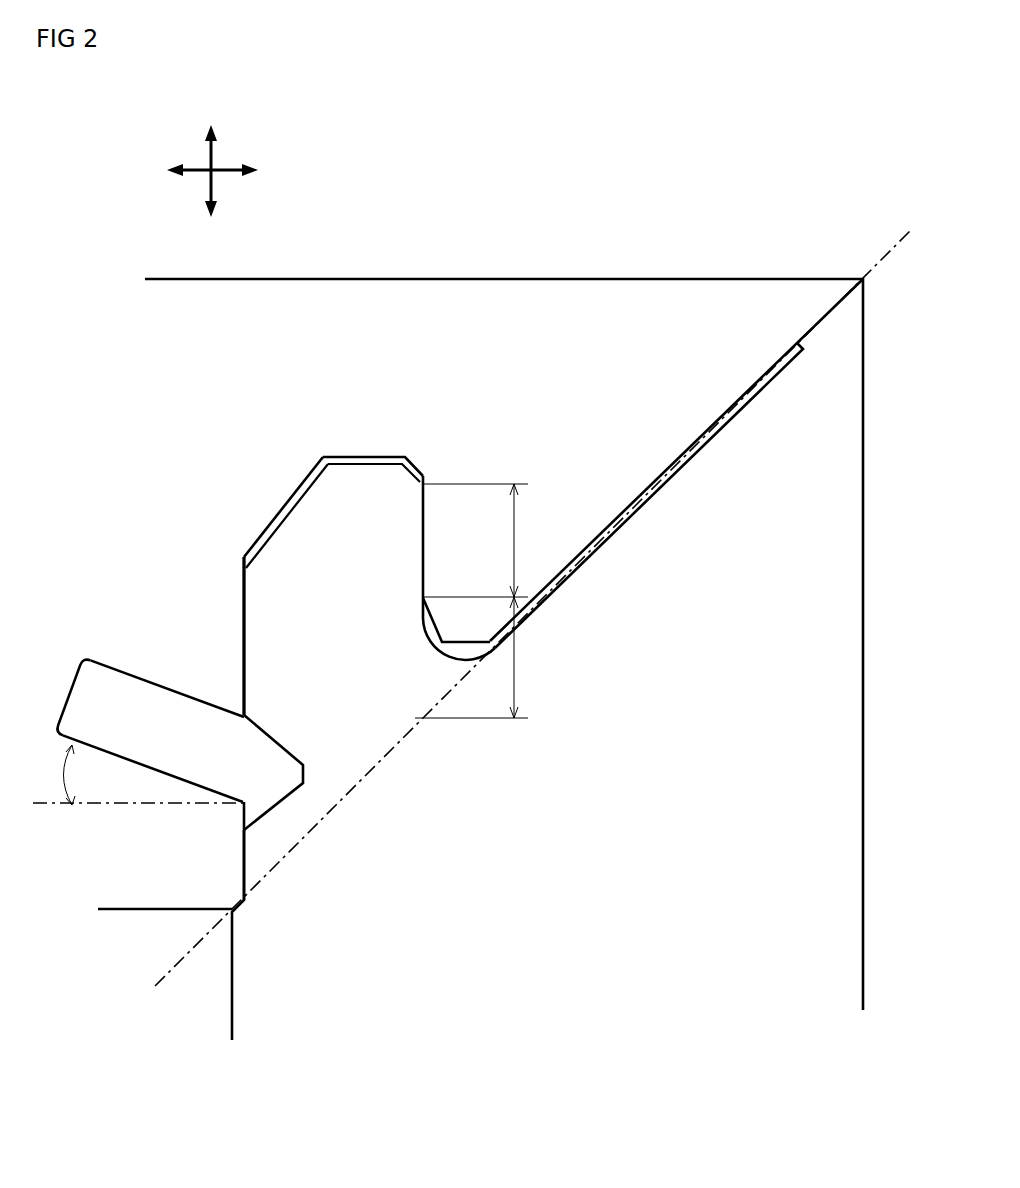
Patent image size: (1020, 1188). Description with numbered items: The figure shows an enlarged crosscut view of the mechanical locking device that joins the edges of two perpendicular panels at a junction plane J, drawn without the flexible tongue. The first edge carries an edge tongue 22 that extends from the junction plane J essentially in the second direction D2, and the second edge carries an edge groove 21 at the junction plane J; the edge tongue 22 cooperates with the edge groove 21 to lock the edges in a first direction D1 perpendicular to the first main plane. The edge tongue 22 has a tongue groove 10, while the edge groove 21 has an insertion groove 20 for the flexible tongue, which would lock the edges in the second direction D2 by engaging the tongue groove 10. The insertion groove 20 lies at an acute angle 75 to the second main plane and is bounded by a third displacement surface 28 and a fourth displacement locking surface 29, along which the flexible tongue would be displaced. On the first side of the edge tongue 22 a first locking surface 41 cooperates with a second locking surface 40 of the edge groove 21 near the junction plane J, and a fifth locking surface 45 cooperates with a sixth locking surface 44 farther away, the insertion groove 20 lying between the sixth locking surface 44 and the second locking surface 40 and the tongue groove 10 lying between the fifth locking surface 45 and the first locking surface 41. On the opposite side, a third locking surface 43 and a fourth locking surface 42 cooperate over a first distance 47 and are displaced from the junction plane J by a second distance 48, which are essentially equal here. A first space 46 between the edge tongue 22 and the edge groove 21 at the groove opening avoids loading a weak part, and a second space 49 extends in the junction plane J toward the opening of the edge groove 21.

The tongue groove 10 is at (263, 760).
The insertion groove 20 is at (143, 730).
The edge groove 21 is at (332, 458).
The edge tongue 22 is at (368, 477).
The third displacement surface 28 is at (145, 768).
The fourth displacement locking surface 29 is at (142, 678).
The second locking surface 40 is at (244, 857).
The first locking surface 41 is at (244, 855).
The fourth locking surface 42 is at (423, 532).
The third locking surface 43 is at (423, 555).
The sixth locking surface 44 is at (244, 625).
The fifth locking surface 45 is at (244, 625).
The first space 46 is at (435, 642).
The first distance 47 is at (487, 540).
The second distance 48 is at (483, 657).
The second space 49 is at (647, 492).
The acute angle 75 is at (44, 775).
The first direction D1 is at (231, 170).
The second direction D2 is at (216, 156).
The junction plane J is at (532, 603).